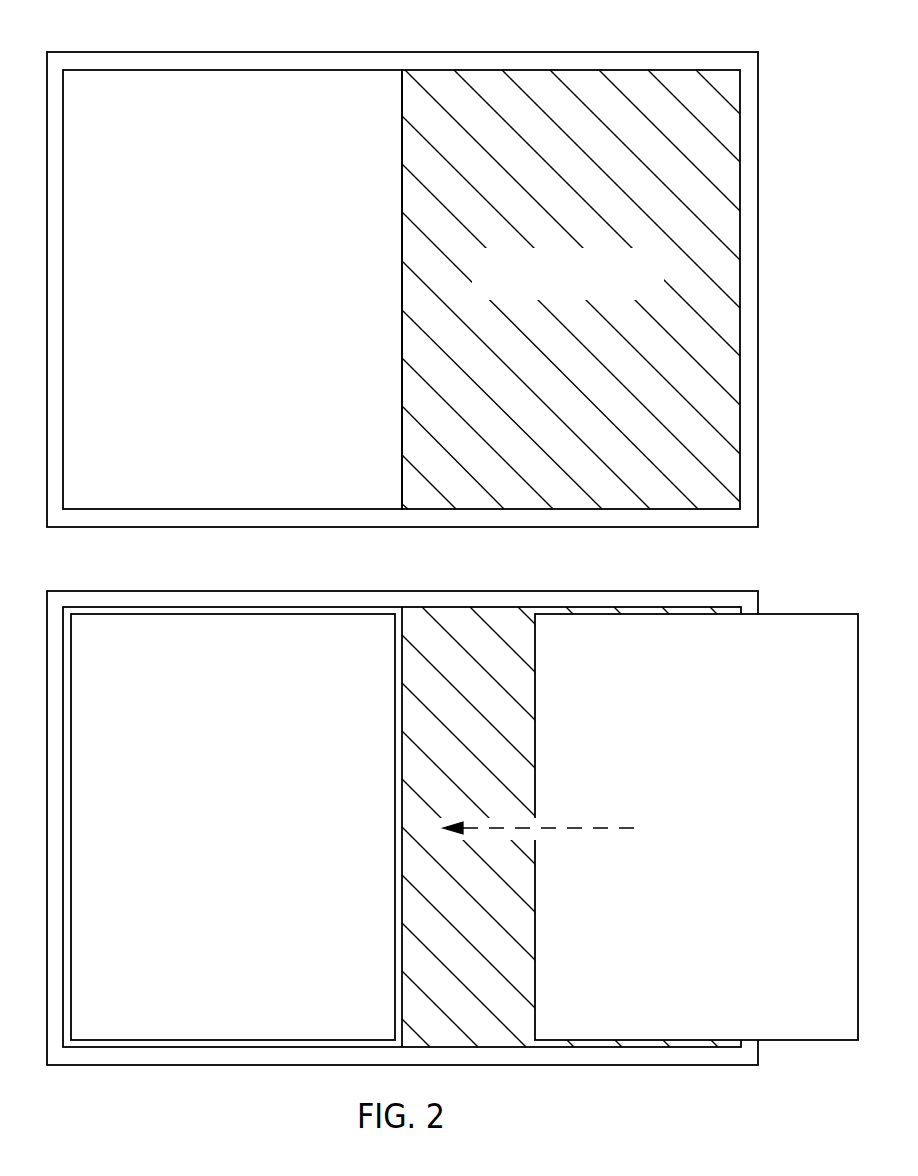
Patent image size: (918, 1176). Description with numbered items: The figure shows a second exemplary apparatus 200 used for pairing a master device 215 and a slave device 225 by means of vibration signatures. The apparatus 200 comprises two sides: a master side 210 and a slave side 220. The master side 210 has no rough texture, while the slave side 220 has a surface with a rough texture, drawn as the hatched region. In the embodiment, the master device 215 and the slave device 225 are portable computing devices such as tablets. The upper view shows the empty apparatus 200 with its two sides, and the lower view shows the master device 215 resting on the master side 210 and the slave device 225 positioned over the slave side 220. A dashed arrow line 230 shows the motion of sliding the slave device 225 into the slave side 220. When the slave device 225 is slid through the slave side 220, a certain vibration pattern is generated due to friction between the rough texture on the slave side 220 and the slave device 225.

The apparatus 200 is at (119, 52).
The master side 210 is at (248, 147).
The slave side 220 is at (581, 147).
The master device 215 is at (248, 699).
The slave device 225 is at (714, 699).
The dashed arrow line 230 is at (500, 830).